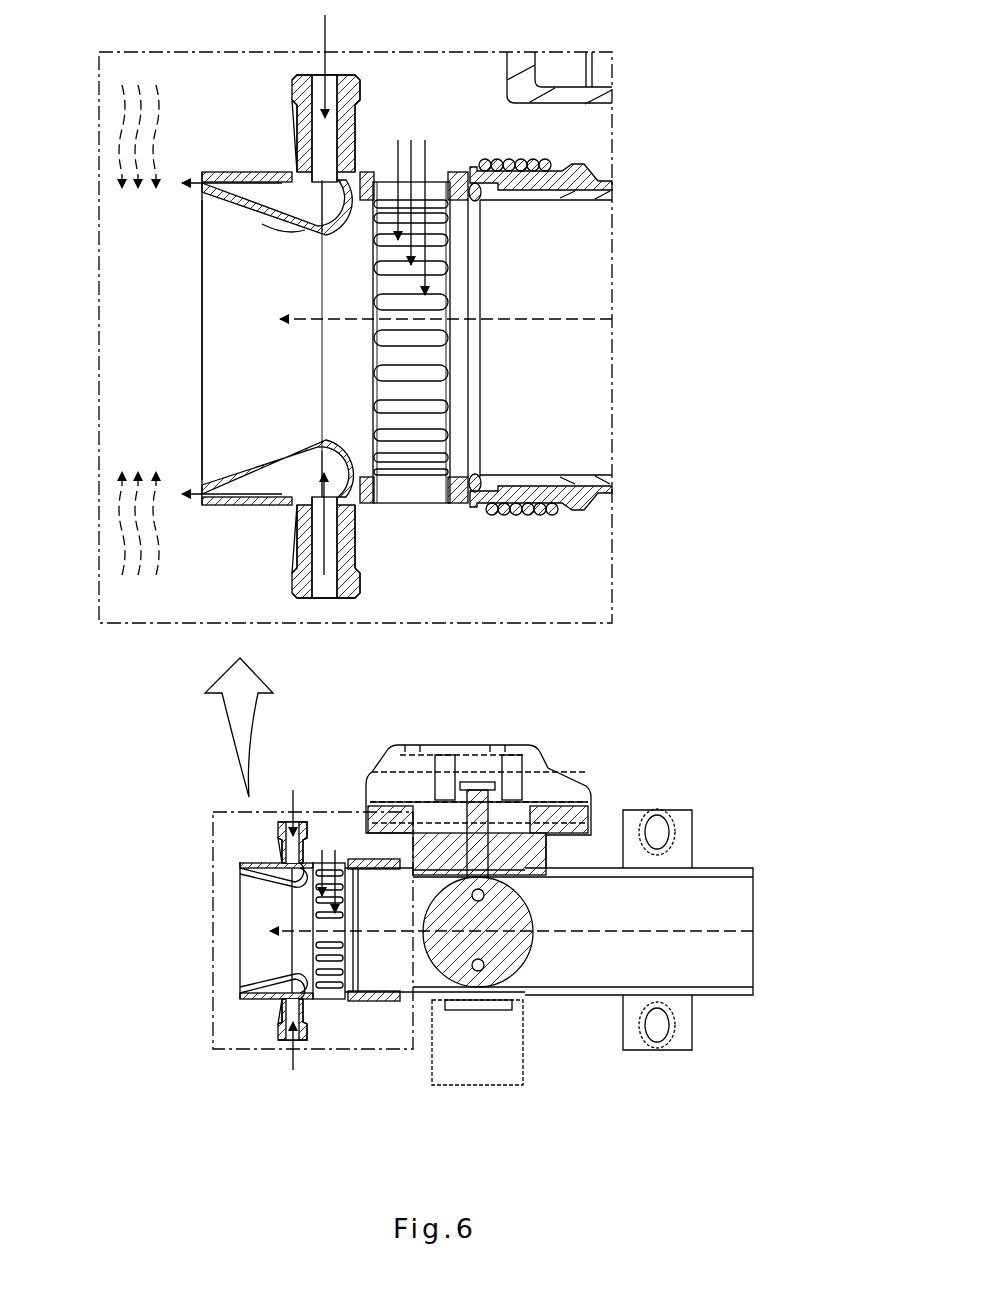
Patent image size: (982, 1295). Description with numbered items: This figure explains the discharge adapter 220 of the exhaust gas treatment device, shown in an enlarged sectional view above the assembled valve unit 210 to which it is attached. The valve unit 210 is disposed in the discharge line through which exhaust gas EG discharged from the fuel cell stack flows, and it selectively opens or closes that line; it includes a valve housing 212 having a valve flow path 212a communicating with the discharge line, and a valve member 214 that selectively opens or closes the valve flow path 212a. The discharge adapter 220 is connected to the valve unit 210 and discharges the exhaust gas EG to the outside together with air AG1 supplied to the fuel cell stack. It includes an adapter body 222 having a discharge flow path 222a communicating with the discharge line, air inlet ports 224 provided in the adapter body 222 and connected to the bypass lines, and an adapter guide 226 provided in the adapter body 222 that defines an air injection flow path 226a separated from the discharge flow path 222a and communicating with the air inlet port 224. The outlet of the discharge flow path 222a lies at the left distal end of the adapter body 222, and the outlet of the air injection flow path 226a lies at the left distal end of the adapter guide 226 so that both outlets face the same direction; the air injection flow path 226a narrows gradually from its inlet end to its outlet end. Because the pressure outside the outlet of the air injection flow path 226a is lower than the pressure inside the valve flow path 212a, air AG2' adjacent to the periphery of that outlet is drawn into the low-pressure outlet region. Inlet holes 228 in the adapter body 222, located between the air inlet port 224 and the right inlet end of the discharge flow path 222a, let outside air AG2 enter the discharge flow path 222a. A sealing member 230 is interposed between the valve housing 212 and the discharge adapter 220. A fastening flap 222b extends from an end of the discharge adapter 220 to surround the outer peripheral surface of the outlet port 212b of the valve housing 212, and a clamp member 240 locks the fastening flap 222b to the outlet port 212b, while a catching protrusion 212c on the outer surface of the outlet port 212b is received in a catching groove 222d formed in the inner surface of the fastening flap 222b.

The discharge adapter 220 is at (370, 150).
The adapter body 222 is at (452, 346).
The discharge flow path 222a is at (251, 288).
The fastening flap 222b is at (600, 180).
The catching groove 222d is at (489, 504).
The air inlet port 224 is at (320, 75).
The adapter guide 226 is at (290, 224).
The air injection flow path 226a is at (298, 195).
The inlet holes 228 is at (420, 438).
The sealing member 230 is at (483, 196).
The clamp member 240 is at (512, 160).
The catching protrusion 212c is at (498, 484).
The outlet port 212b is at (572, 477).
The valve unit 210 is at (600, 850).
The valve housing 212 is at (536, 1000).
The valve flow path 212a is at (742, 952).
The valve member 214 is at (455, 958).
The air AG1 is at (338, 22).
The air outside of the adapter body AG2 is at (398, 524).
The air adjacent to the periphery of the outlet of the air injection flow path AG2' is at (137, 327).
The exhaust gas EG is at (518, 318).